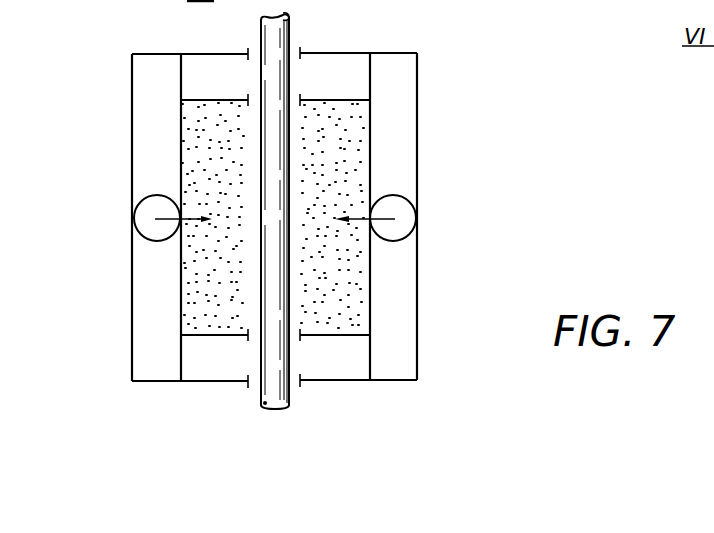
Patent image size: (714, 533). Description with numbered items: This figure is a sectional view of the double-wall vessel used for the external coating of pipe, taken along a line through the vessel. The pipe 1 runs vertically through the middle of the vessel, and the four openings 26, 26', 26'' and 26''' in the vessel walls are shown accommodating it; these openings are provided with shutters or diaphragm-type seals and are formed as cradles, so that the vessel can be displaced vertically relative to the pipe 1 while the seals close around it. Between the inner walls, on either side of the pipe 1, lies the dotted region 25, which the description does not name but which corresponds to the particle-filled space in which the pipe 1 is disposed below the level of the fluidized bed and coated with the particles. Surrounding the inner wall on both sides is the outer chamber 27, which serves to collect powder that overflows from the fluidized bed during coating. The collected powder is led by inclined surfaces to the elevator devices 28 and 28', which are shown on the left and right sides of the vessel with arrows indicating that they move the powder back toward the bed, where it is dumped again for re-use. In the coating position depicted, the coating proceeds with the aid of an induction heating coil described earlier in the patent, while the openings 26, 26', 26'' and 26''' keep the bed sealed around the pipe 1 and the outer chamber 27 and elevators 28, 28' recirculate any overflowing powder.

The pipe 1 is at (283, 397).
The porous filling material 25 is at (352, 292).
The opening 26 is at (274, 39).
The opening 26' is at (275, 83).
The opening 26'' is at (275, 353).
The opening 26''' is at (274, 405).
The outer chamber 27 is at (138, 301).
The elevator device 28 is at (124, 211).
The elevator device 28' is at (404, 218).